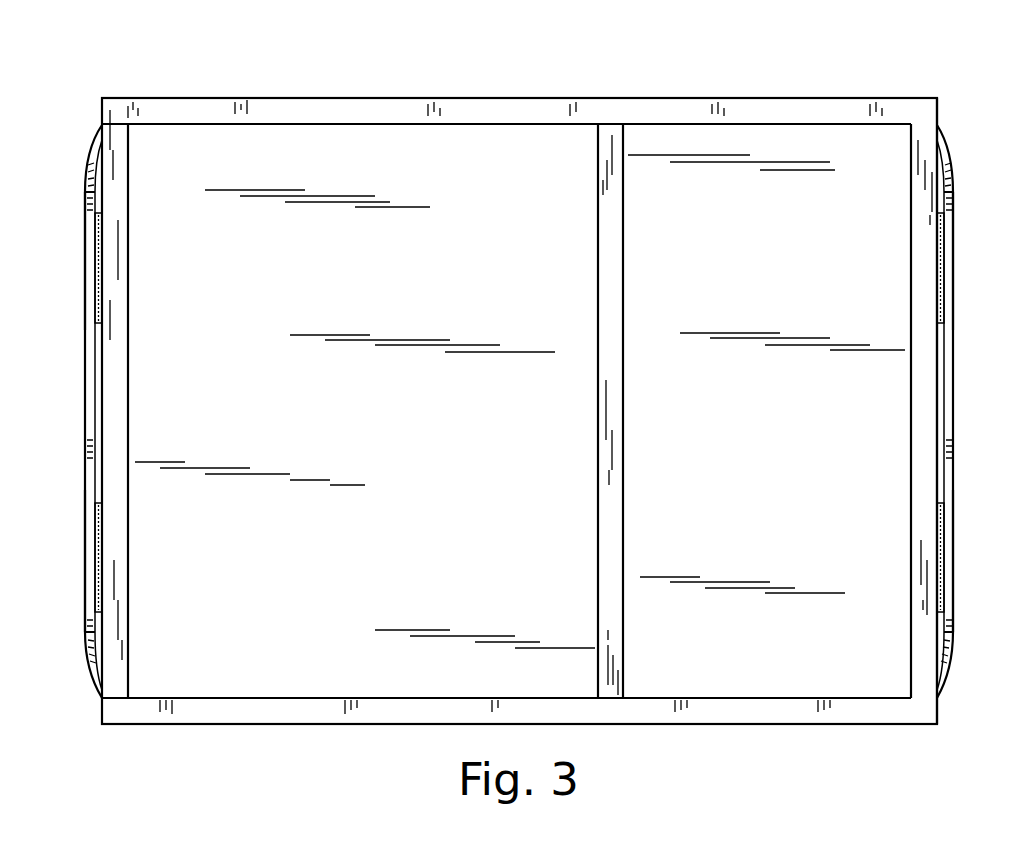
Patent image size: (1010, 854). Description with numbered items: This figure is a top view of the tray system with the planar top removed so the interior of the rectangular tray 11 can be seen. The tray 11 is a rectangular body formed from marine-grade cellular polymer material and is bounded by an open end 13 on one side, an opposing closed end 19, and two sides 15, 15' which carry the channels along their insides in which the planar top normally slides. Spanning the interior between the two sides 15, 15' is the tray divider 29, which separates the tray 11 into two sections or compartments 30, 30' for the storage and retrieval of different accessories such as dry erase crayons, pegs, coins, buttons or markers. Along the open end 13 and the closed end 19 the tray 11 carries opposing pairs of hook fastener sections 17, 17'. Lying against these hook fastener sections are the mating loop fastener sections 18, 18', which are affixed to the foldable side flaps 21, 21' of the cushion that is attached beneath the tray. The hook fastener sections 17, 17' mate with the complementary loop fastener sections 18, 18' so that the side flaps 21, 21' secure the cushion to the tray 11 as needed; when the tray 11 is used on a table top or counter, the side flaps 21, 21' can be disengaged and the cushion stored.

The rectangular tray 11 is at (709, 70).
The open end 13 is at (947, 108).
The side 15 is at (506, 737).
The side 15' is at (506, 87).
The hook fastener section 17 is at (519, 554).
The hook fastener section 17' is at (519, 264).
The loop fastener section 18 is at (514, 561).
The loop fastener section 18' is at (517, 261).
The closed end 19 is at (128, 413).
The foldable side flap 21 is at (971, 411).
The foldable side flap 21' is at (68, 411).
The tray divider 29 is at (608, 297).
The compartment 30 is at (365, 419).
The compartment 30' is at (766, 374).